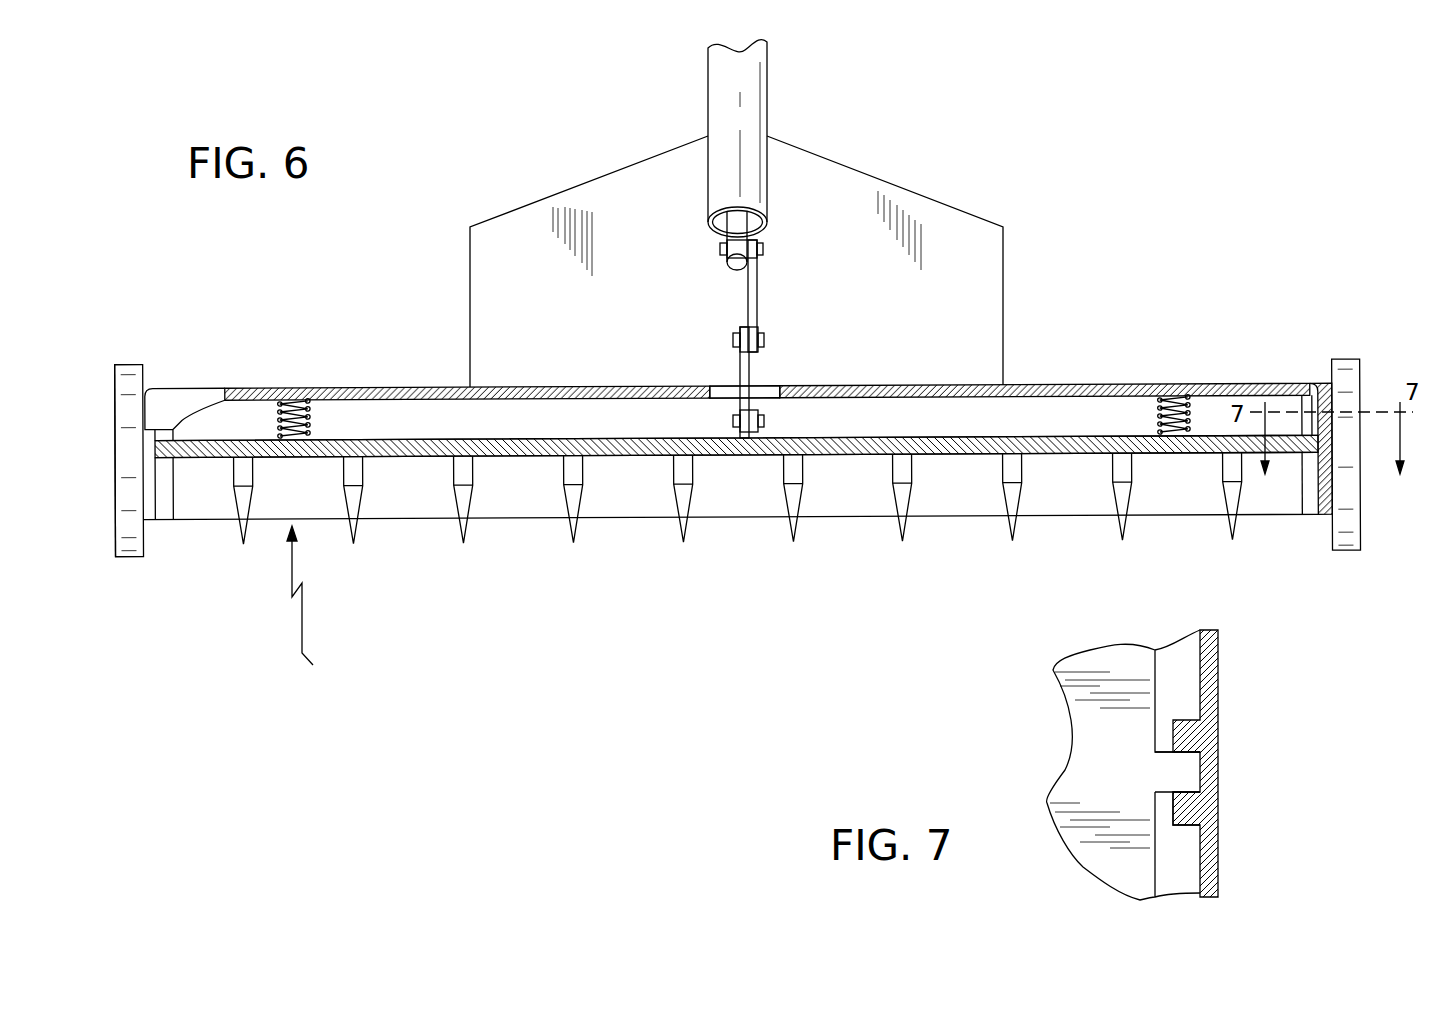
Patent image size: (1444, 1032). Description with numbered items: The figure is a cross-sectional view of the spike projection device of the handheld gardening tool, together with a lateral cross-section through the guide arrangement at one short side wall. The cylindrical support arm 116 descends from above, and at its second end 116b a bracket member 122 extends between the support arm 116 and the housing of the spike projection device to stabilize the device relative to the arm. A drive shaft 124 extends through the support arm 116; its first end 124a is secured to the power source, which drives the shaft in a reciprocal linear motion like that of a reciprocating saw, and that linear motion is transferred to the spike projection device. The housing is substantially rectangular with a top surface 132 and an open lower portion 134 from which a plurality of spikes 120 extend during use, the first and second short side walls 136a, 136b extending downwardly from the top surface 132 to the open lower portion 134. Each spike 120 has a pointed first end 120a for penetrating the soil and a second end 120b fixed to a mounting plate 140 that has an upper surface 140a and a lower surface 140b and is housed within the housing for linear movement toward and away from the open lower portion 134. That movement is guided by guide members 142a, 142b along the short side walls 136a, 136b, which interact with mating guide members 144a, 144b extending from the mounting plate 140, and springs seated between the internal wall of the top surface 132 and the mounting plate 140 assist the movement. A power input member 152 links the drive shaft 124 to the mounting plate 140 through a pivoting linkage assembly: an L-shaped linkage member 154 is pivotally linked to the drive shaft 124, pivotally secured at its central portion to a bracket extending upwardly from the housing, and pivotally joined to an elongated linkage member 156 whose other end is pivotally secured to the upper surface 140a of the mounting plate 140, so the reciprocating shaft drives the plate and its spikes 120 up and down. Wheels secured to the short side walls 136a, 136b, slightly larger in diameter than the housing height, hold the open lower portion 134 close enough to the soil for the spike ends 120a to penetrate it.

In FIG. 6, the cylindrical support arm 116 is at (767, 73).
In FIG. 6, the second end of support arm 116b is at (768, 205).
In FIG. 6, the bracket member 122 is at (917, 187).
In FIG. 6, the drive shaft 124 is at (733, 218).
In FIG. 6, the first end of drive shaft 124a is at (720, 246).
In FIG. 6, the top surface 132 is at (363, 387).
In FIG. 6, the open lower portion 134 is at (324, 602).
In FIG. 6, the first short side wall 136a is at (115, 407).
In FIG. 6, the second short side wall 136b is at (1325, 400).
In FIG. 7, the second short side wall 136b is at (1218, 742).
In FIG. 6, the mounting plate 140 is at (730, 452).
In FIG. 7, the mounting plate 140 is at (1138, 682).
In FIG. 6, the upper surface of mounting plate 140a is at (420, 440).
In FIG. 6, the lower surface of mounting plate 140b is at (960, 455).
In FIG. 6, the guide member 142a is at (165, 517).
In FIG. 6, the guide member 142b is at (1303, 468).
In FIG. 7, the guide member 142b is at (1195, 800).
In FIG. 6, the mating guide member 144a is at (162, 425).
In FIG. 6, the mating guide member 144b is at (1310, 400).
In FIG. 7, the mating guide member 144b is at (1172, 773).
In FIG. 6, the power input member 152 is at (723, 408).
In FIG. 6, the L-shaped linkage member 154 is at (758, 292).
In FIG. 6, the elongated linkage member 156 is at (753, 393).
In FIG. 6, the spikes 120 is at (732, 546).
In FIG. 6, the pointed first end of spike 120a is at (358, 505).
In FIG. 6, the second end of spike 120b is at (473, 458).